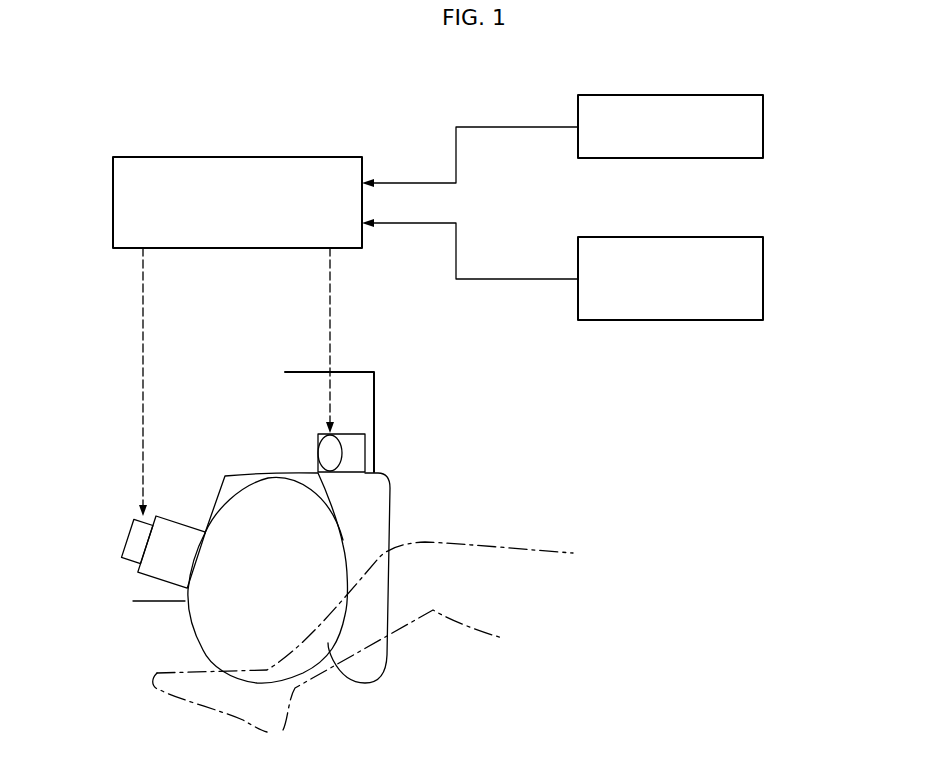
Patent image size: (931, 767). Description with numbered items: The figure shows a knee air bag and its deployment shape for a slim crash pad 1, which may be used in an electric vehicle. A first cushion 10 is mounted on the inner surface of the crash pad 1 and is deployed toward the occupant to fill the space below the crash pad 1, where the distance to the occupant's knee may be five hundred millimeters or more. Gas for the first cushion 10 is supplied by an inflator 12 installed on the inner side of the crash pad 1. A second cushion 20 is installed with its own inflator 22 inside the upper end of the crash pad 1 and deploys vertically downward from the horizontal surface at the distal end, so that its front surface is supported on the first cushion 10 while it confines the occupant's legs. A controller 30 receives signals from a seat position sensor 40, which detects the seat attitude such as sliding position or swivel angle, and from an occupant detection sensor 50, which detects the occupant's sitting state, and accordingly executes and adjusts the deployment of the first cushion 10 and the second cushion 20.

The crash pad 1 is at (374, 399).
The first cushion 10 is at (190, 625).
The inflator 12 is at (137, 543).
The second cushion 20 is at (390, 510).
The inflator 22 is at (332, 450).
The controller 30 is at (237, 157).
The seat position sensor 40 is at (763, 124).
The occupant detection sensor 50 is at (763, 276).